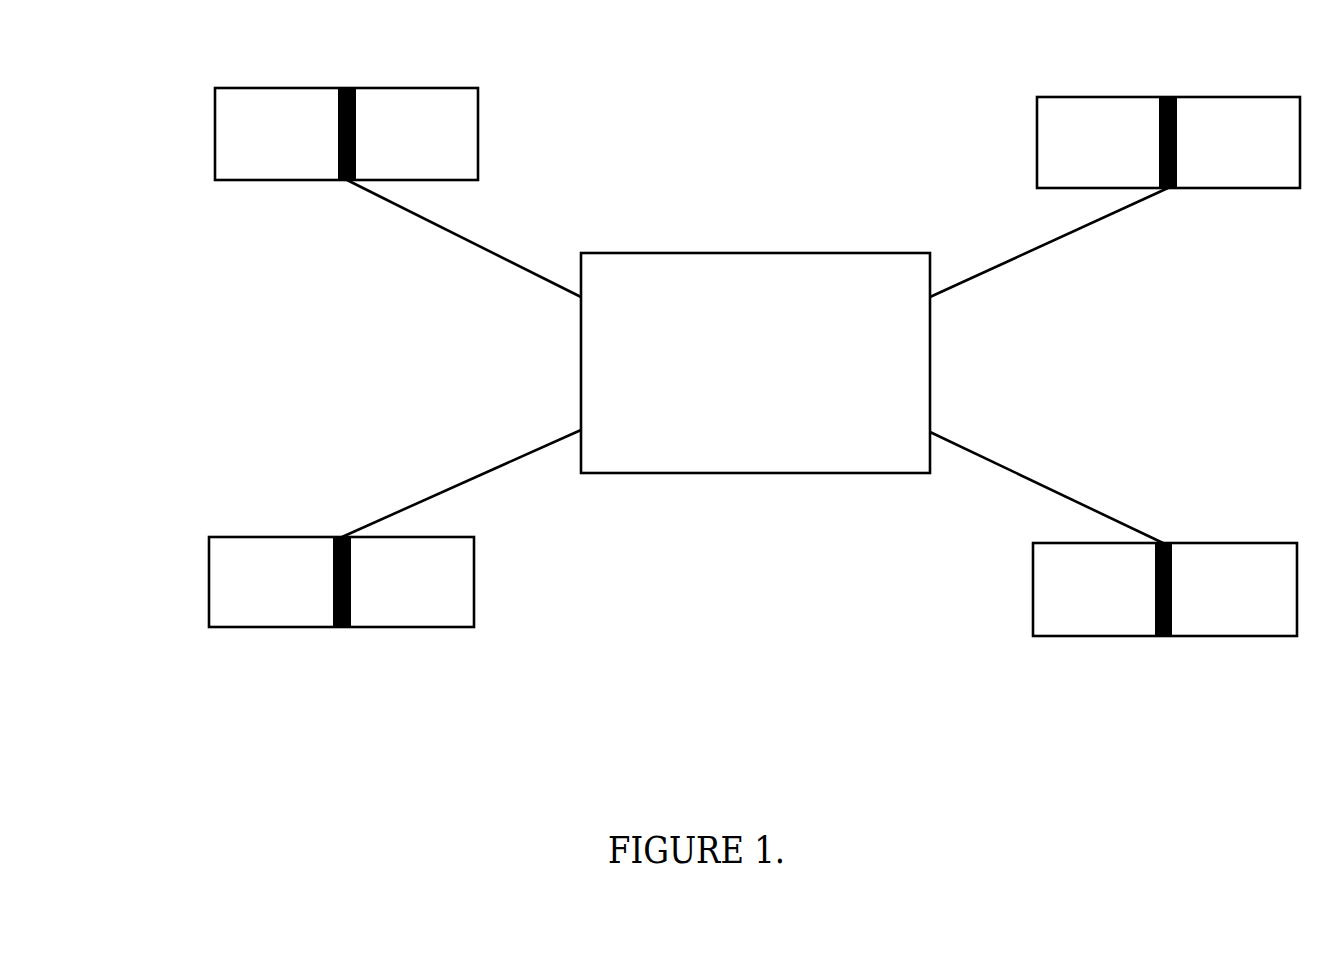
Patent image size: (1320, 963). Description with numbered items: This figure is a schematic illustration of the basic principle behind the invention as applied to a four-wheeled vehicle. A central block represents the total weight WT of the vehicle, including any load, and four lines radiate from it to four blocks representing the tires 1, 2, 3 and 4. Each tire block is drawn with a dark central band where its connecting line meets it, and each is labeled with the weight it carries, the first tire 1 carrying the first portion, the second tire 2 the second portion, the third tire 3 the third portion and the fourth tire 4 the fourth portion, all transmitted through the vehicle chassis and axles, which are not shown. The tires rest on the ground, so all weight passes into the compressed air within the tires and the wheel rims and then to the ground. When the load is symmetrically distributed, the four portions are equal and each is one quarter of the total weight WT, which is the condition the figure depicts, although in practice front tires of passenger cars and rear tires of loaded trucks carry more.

The tire 1 is at (398, 158).
The tire 2 is at (395, 563).
The tire 3 is at (1115, 159).
The tire 4 is at (1113, 567).
The total weight WT is at (755, 363).